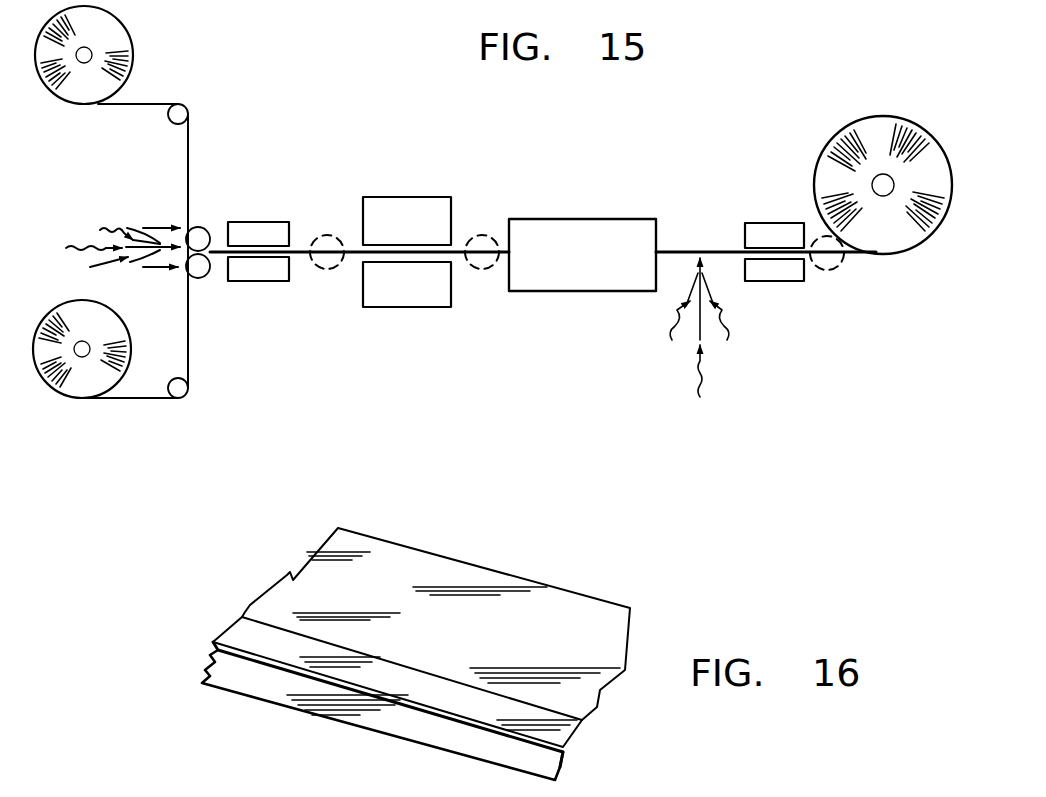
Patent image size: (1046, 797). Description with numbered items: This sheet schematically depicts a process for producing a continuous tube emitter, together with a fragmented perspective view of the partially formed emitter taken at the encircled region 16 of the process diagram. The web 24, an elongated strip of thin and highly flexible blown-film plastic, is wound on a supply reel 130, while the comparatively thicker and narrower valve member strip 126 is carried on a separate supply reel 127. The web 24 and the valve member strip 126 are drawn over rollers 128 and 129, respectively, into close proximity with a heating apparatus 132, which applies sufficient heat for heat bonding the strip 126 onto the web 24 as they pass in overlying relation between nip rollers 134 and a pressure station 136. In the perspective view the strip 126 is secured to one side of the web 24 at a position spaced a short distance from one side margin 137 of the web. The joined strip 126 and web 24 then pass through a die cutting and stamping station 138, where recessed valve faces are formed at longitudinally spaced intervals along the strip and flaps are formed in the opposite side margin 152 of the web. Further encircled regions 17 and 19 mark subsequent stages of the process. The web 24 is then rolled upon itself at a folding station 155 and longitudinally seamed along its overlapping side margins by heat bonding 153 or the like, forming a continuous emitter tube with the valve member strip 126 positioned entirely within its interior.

In FIG. 15, the web 24 is at (187, 352).
In FIG. 16, the web 24 is at (560, 620).
In FIG. 15, the supply reel 127 is at (123, 53).
In FIG. 15, the supply reel 130 is at (80, 380).
In FIG. 15, the roller 129 is at (172, 120).
In FIG. 15, the roller 128 is at (182, 400).
In FIG. 15, the valve member strip 126 is at (190, 147).
In FIG. 16, the valve member strip 126 is at (257, 635).
In FIG. 15, the nip rollers 134 is at (199, 226).
In FIG. 15, the heating apparatus 132 is at (80, 242).
In FIG. 15, the pressure station 136 is at (270, 220).
In FIG. 15, the die cutting and stamping station 138 is at (420, 196).
In FIG. 15, the encircled region 16 is at (316, 263).
In FIG. 15, the section line 17 is at (480, 266).
In FIG. 15, the section line 19 is at (822, 270).
In FIG. 15, the folding station 155 is at (598, 219).
In FIG. 15, the heat bonding 153 is at (683, 353).
In FIG. 15, the side margin 152 is at (774, 252).
In FIG. 16, the side margin 152 is at (304, 786).
In FIG. 16, the side margin 137 is at (270, 703).